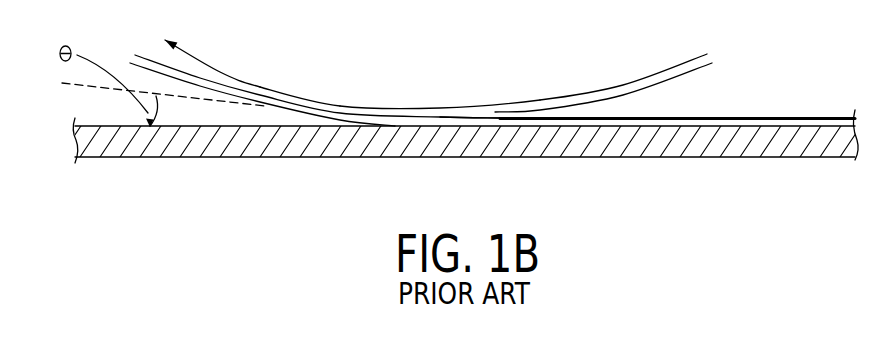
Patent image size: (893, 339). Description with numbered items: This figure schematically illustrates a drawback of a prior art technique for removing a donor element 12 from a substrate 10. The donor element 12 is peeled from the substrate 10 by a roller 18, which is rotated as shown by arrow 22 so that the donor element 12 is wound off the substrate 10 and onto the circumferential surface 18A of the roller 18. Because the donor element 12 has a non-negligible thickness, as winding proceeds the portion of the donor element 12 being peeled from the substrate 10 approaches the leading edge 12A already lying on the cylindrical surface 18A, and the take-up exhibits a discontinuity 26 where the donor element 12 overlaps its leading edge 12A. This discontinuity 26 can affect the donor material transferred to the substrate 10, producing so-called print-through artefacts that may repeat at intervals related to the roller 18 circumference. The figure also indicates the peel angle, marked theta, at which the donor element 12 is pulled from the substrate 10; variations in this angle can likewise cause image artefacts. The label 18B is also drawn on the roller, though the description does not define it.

The substrate 10 is at (589, 143).
The donor element 12 is at (255, 95).
The leading edge of donor element 12A is at (500, 110).
The roller 18 is at (428, 92).
The circumferential surface of roller 18A is at (528, 100).
The left end of lifted region 18B is at (332, 106).
The arrow indicating roller rotation 22 is at (220, 73).
The discontinuity 26 is at (482, 110).